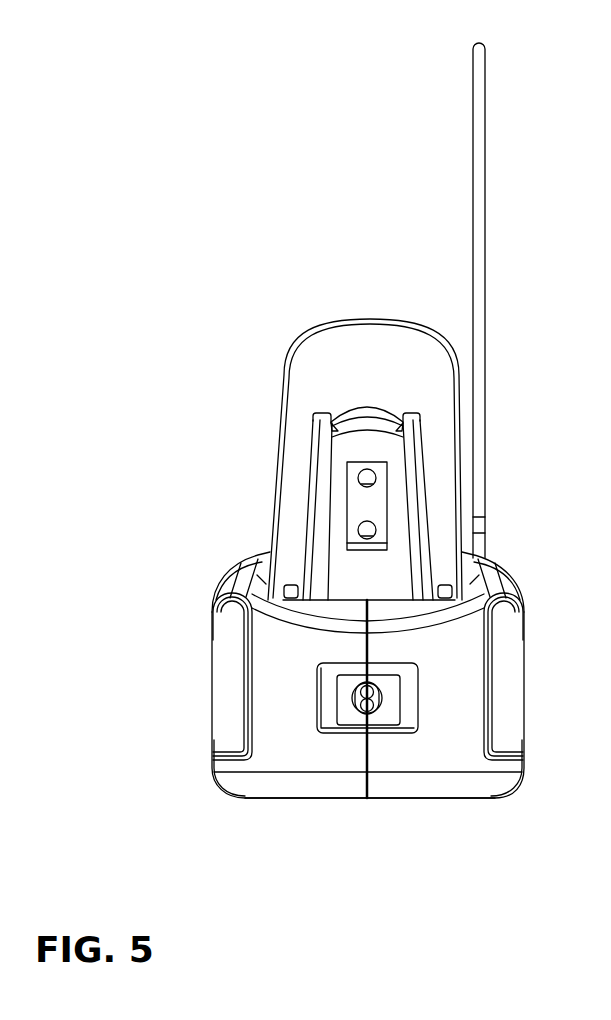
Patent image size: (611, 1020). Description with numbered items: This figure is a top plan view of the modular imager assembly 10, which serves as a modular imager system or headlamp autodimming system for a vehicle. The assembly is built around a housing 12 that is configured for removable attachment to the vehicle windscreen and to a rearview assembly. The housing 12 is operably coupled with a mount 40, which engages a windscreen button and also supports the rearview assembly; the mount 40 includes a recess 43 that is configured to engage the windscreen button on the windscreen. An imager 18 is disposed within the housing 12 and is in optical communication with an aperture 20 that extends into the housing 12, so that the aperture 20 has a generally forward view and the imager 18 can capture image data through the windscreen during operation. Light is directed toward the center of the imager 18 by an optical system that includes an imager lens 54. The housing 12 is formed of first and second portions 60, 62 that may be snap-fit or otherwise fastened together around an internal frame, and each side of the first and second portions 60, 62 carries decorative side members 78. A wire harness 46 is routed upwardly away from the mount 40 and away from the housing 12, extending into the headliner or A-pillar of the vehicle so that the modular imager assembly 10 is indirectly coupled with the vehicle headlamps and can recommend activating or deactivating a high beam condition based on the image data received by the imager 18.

The modular imager assembly 10 is at (264, 832).
The housing 12 is at (313, 757).
The imager 18 is at (348, 720).
The aperture 20 is at (417, 722).
The mount 40 is at (358, 318).
The recess 43 is at (411, 525).
The wire harness 46 is at (481, 192).
The imager lens 54 is at (357, 688).
The first portion 60 is at (452, 717).
The second portion 62 is at (275, 728).
The decorative side members 78 is at (232, 686).